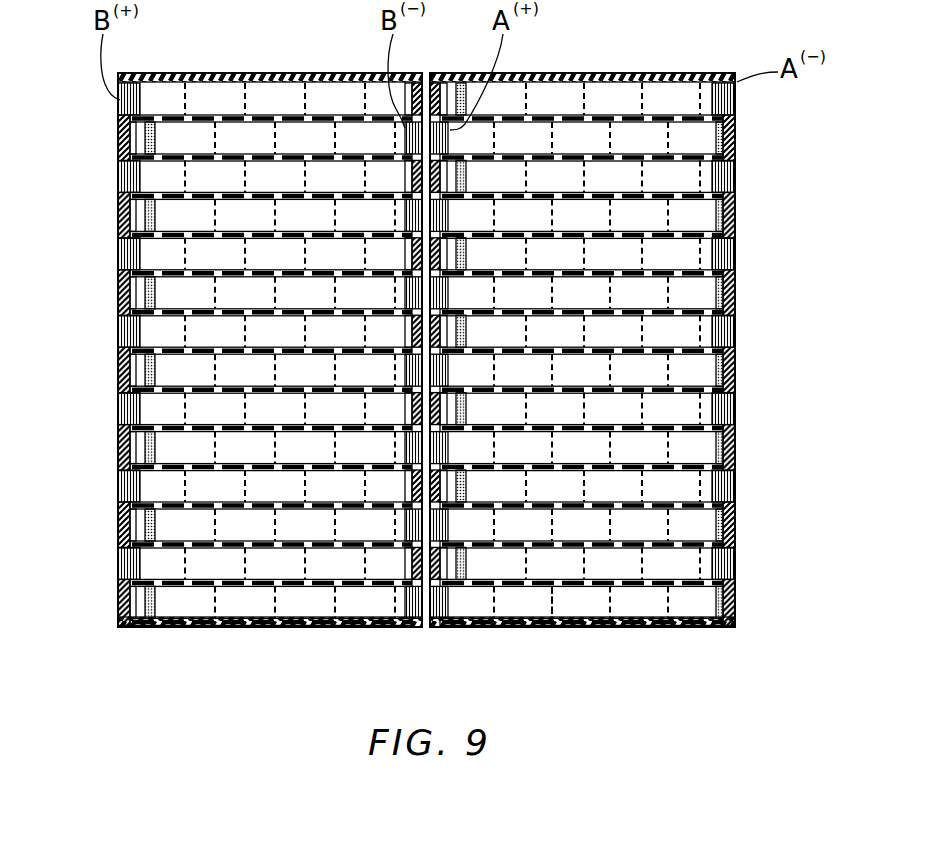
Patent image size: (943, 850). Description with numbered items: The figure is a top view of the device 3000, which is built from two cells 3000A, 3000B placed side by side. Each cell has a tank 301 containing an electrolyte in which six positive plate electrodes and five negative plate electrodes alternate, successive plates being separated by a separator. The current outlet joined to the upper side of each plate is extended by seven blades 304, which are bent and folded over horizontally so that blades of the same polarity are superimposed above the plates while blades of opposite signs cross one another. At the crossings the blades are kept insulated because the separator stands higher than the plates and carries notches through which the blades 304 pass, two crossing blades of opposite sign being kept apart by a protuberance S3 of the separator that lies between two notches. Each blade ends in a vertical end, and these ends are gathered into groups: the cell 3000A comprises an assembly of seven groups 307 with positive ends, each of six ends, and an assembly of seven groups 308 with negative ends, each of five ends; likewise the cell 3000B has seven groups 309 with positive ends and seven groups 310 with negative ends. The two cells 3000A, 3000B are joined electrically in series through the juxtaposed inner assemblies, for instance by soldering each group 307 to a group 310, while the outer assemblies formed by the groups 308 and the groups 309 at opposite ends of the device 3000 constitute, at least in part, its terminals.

The tank 301 is at (262, 622).
The blade 304 is at (553, 600).
The group with positive ends 307 is at (448, 134).
The group with negative ends 308 is at (737, 99).
The group with positive ends 309 is at (118, 110).
The group with negative ends 310 is at (405, 140).
The device 3000 is at (762, 213).
The cell 3000A is at (754, 514).
The cell 3000B is at (104, 604).
The protuberance S3 is at (689, 110).